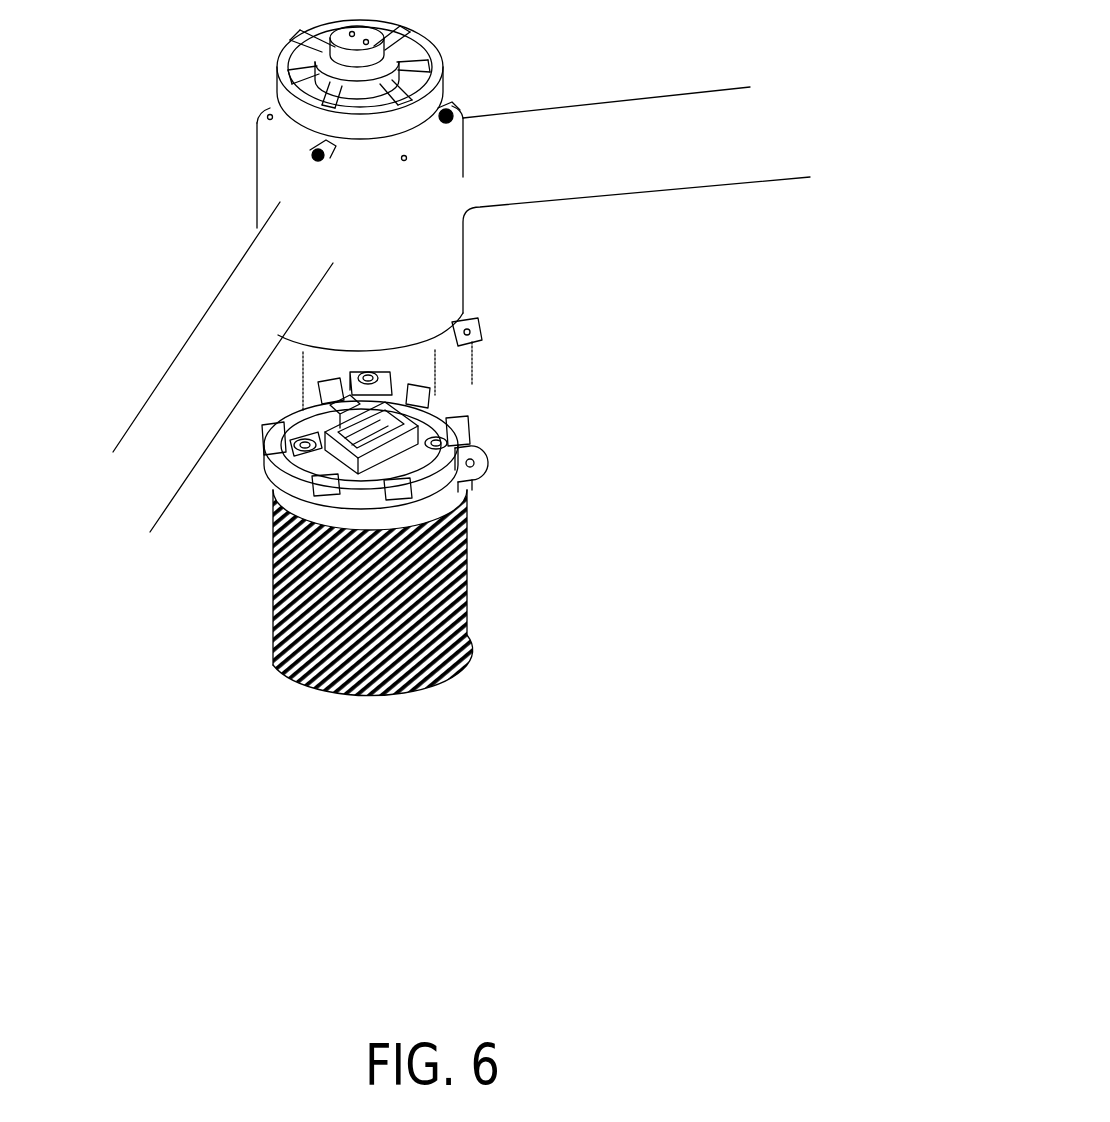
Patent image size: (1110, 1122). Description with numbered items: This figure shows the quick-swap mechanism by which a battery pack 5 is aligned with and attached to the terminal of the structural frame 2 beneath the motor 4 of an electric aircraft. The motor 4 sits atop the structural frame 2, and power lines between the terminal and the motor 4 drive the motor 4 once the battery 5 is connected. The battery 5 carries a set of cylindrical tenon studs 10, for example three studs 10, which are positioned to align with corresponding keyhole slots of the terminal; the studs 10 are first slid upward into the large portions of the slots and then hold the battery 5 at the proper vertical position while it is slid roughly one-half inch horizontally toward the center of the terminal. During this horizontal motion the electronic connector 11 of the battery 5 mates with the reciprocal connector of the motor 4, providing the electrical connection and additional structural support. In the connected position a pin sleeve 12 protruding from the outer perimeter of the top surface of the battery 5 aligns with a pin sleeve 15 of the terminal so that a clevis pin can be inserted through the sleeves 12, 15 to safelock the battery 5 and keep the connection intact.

The structural frame 2 is at (463, 270).
The motor 4 is at (430, 63).
The battery pack 5 is at (465, 572).
The cylindrical tenon studs 10 is at (300, 447).
The electronic connector 11 is at (388, 448).
The pin sleeve 12 is at (477, 468).
The pin sleeve 15 is at (470, 323).